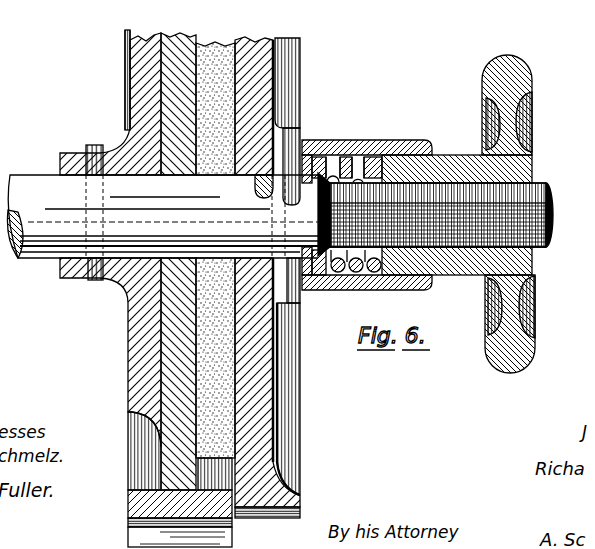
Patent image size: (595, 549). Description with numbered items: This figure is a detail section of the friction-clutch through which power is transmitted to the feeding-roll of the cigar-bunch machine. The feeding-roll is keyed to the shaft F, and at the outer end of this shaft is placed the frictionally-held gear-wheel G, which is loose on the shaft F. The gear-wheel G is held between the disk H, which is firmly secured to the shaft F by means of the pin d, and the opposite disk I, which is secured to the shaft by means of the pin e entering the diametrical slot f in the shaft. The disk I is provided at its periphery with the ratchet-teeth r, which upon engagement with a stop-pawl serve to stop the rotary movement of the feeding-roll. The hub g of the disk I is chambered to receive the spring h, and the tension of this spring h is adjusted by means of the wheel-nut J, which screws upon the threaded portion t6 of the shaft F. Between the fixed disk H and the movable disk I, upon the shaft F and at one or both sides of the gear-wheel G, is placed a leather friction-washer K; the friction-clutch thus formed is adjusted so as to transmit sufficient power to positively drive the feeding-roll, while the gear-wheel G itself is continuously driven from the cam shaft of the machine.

The disk H is at (138, 92).
The leather friction-washer K is at (213, 58).
The disk I is at (262, 92).
The pin e is at (292, 137).
The diametrical slot f is at (268, 186).
The pin d is at (99, 148).
The shaft F is at (168, 215).
The threaded portion t6 is at (532, 186).
The wheel-nut J is at (530, 86).
The spring h is at (332, 158).
The hub g is at (366, 156).
The gear-wheel G is at (138, 501).
The ratchet-teeth r is at (281, 518).